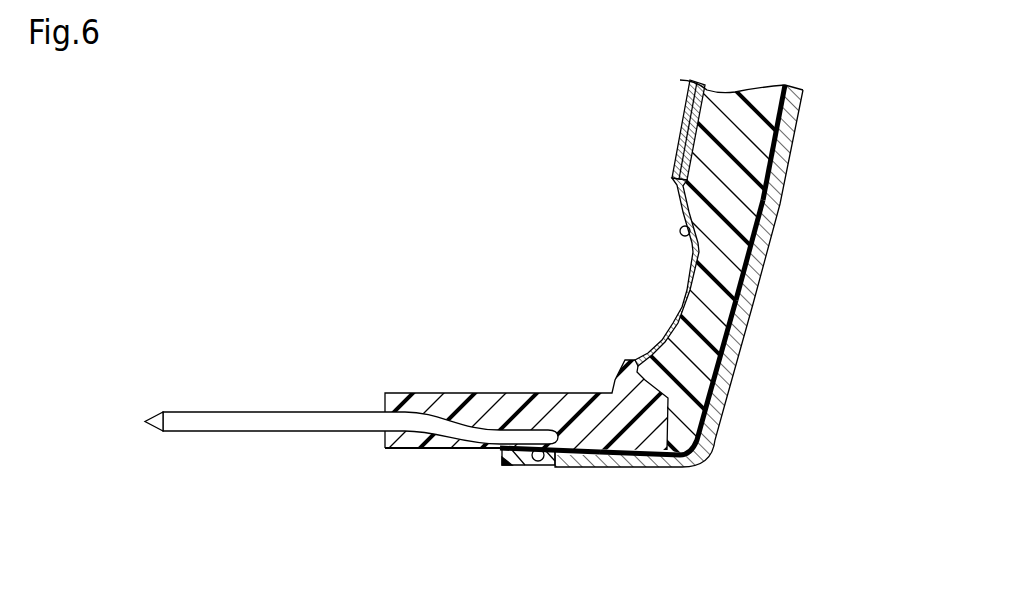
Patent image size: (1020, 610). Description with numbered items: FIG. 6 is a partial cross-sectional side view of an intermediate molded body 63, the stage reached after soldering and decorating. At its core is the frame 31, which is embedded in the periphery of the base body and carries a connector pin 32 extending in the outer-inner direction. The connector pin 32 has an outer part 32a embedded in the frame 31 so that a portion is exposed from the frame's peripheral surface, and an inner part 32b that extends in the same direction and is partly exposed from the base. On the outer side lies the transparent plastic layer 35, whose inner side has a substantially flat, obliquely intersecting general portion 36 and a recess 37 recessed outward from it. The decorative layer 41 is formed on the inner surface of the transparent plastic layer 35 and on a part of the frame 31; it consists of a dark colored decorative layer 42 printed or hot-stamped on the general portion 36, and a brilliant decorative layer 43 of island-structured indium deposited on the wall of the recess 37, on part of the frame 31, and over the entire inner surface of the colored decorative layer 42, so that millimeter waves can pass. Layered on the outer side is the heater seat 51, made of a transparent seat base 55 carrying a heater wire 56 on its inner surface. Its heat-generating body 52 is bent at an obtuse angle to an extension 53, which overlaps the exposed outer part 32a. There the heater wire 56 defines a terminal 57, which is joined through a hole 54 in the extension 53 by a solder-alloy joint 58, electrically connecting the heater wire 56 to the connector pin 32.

The frame 31 is at (583, 392).
The connector pin 32 is at (351, 460).
The outer part 32a is at (443, 433).
The inner part 32b is at (190, 431).
The transparent plastic layer 35 is at (760, 92).
The general portion 36 is at (706, 112).
The recess 37 is at (690, 227).
The decorative layer 41 is at (852, 135).
The colored decorative layer 42 is at (768, 156).
The brilliant decorative layer 43 is at (765, 187).
The heater seat 51 is at (765, 448).
The heat-generating body 52 is at (704, 438).
The extension 53 is at (660, 472).
The hole 54 is at (548, 463).
The seat base 55 is at (762, 260).
The heater wire 56 is at (752, 288).
The terminal 57 is at (562, 446).
The joint 58 is at (536, 462).
The intermediate molded body 63 is at (572, 200).